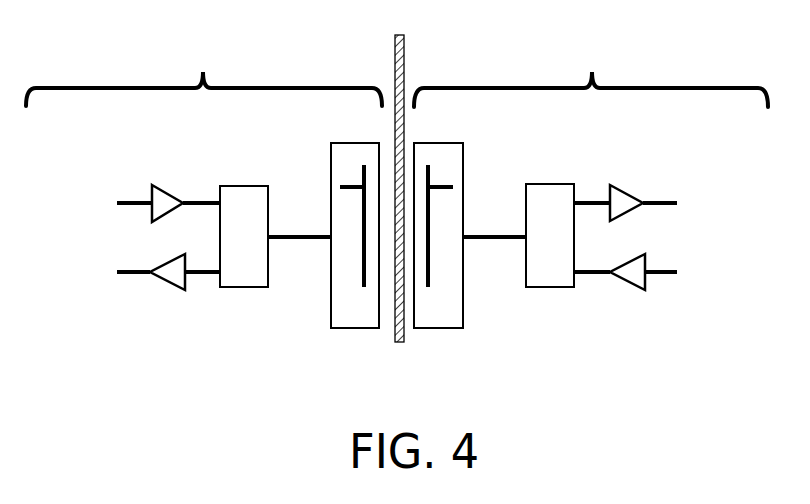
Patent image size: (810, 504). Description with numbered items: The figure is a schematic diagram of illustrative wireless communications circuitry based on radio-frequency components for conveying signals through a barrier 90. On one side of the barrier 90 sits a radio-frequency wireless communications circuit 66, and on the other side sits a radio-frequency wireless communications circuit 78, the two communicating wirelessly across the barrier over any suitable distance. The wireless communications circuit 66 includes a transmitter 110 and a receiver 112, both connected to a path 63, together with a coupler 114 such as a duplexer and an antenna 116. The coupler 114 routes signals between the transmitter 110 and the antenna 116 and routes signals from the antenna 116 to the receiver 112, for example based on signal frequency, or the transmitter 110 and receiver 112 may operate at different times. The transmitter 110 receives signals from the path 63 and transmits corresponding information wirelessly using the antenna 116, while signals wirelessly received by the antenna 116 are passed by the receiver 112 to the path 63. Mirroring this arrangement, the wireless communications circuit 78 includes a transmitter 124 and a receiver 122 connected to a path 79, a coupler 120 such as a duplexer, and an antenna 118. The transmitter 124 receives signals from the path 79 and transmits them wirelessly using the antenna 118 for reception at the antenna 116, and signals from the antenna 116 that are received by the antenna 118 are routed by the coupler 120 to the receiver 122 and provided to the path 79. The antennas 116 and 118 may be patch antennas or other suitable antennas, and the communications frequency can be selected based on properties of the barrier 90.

The path 63 is at (132, 205).
The wireless communications circuit 66 is at (204, 68).
The wireless communications circuit 78 is at (591, 68).
The path 79 is at (658, 205).
The barrier 90 is at (403, 55).
The transmitter 110 is at (152, 183).
The receiver 112 is at (178, 285).
The coupler 114 is at (222, 287).
The antenna 116 is at (342, 329).
The antenna 118 is at (437, 328).
The coupler 120 is at (528, 288).
The receiver 122 is at (612, 185).
The transmitter 124 is at (642, 287).